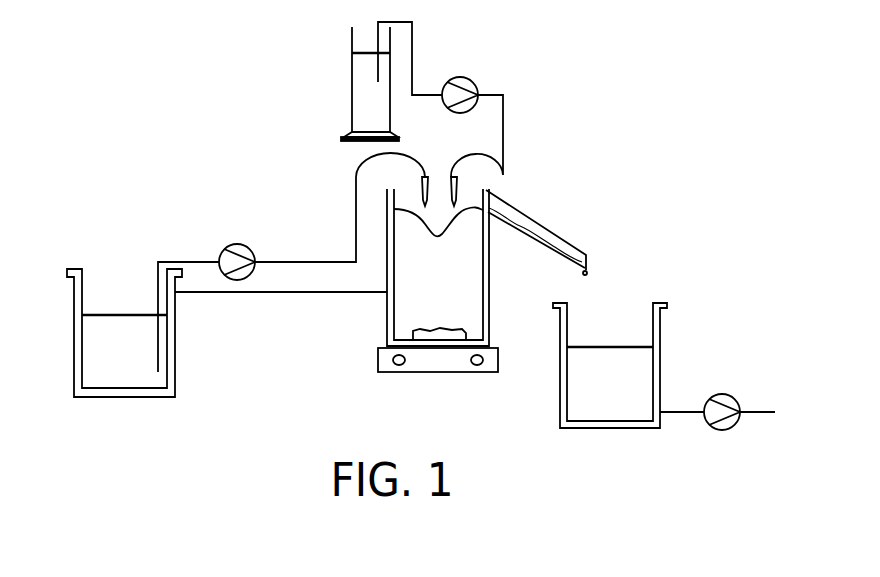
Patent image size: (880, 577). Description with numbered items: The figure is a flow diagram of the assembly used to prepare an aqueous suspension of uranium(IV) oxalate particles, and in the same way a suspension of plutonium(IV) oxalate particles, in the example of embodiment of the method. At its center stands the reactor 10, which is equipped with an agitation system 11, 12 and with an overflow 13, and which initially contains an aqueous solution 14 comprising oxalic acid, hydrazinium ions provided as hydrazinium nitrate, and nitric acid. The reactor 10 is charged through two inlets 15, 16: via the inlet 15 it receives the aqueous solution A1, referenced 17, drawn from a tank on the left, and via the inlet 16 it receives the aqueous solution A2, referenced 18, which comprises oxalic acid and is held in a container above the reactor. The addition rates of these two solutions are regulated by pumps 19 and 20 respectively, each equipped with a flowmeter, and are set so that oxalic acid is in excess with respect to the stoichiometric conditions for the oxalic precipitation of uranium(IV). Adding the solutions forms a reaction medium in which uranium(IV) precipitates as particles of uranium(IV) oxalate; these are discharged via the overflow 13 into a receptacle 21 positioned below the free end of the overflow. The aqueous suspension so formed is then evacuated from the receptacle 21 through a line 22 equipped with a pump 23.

The reactor 10 is at (490, 266).
The agitation system 11 is at (413, 333).
The agitation system 12 is at (425, 369).
The overflow 13 is at (545, 232).
The aqueous solution 14 is at (470, 301).
The inlet 15 is at (320, 261).
The inlet 16 is at (505, 132).
The aqueous solution A1 17 is at (113, 328).
The aqueous solution A2 18 is at (359, 107).
The pump 19 is at (243, 243).
The pump 20 is at (476, 79).
The waste liquid tank 21 is at (662, 330).
The line 22 is at (677, 414).
The pump 23 is at (720, 393).